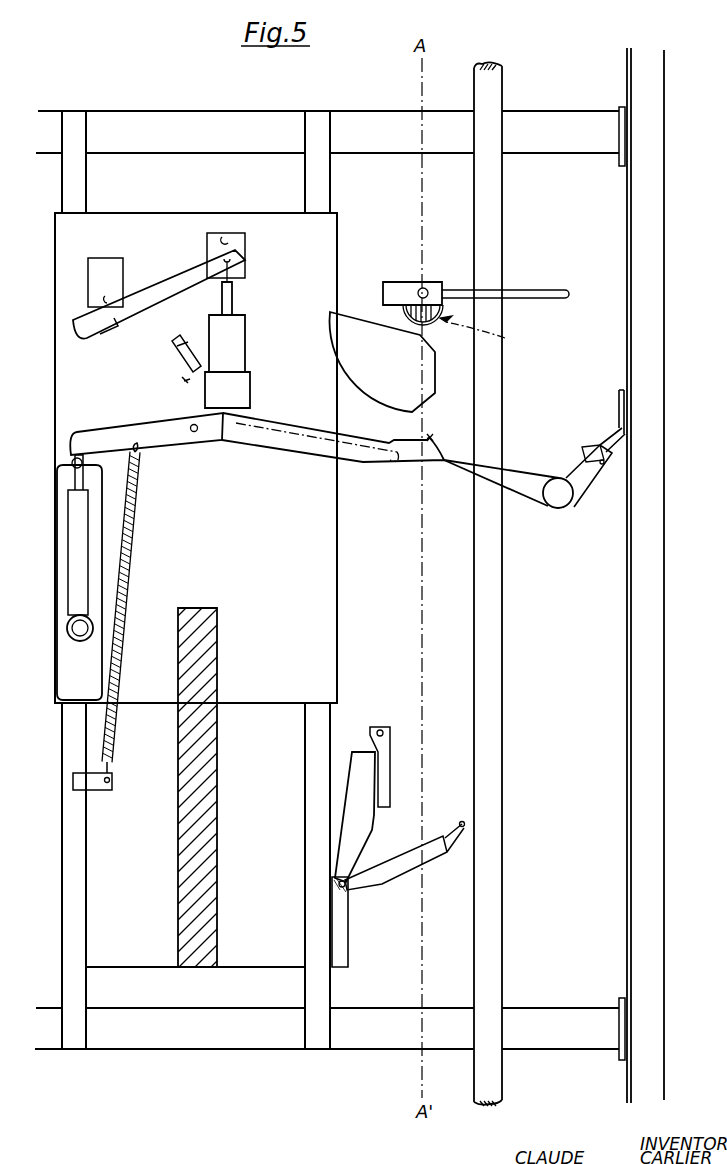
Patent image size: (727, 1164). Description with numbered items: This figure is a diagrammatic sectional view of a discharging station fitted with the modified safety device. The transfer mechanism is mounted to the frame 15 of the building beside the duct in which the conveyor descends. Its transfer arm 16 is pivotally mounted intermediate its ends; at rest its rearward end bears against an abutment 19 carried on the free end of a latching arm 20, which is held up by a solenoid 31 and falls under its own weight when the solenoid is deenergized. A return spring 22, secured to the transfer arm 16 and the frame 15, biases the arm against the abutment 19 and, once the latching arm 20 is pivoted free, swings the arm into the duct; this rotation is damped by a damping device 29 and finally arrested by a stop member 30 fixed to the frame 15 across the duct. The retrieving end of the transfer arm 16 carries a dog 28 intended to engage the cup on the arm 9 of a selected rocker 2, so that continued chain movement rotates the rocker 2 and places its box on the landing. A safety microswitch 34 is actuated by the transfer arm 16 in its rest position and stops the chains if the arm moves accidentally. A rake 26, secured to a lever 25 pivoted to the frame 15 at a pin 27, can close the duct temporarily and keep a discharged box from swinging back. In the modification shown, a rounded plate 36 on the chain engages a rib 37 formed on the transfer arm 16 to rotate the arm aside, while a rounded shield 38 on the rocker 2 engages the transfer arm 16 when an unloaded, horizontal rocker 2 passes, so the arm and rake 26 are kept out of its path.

The rocker 2 is at (405, 286).
The arm of the rocker 9 is at (562, 289).
The frame 15 is at (361, 126).
The transfer arm 16 is at (121, 437).
The abutment 19 is at (98, 330).
The latching arm 20 is at (78, 323).
The return spring 22 is at (125, 672).
The lever 25 is at (350, 817).
The rake 26 is at (403, 877).
The pin 27 is at (345, 892).
The dog 28 is at (437, 445).
The damping device 29 is at (73, 560).
The stop member 30 is at (594, 450).
The solenoid 31 is at (233, 350).
The safety microswitch 34 is at (184, 343).
The rounded plate 36 is at (385, 362).
The rib 37 is at (349, 466).
The rounded shield 38 is at (487, 333).